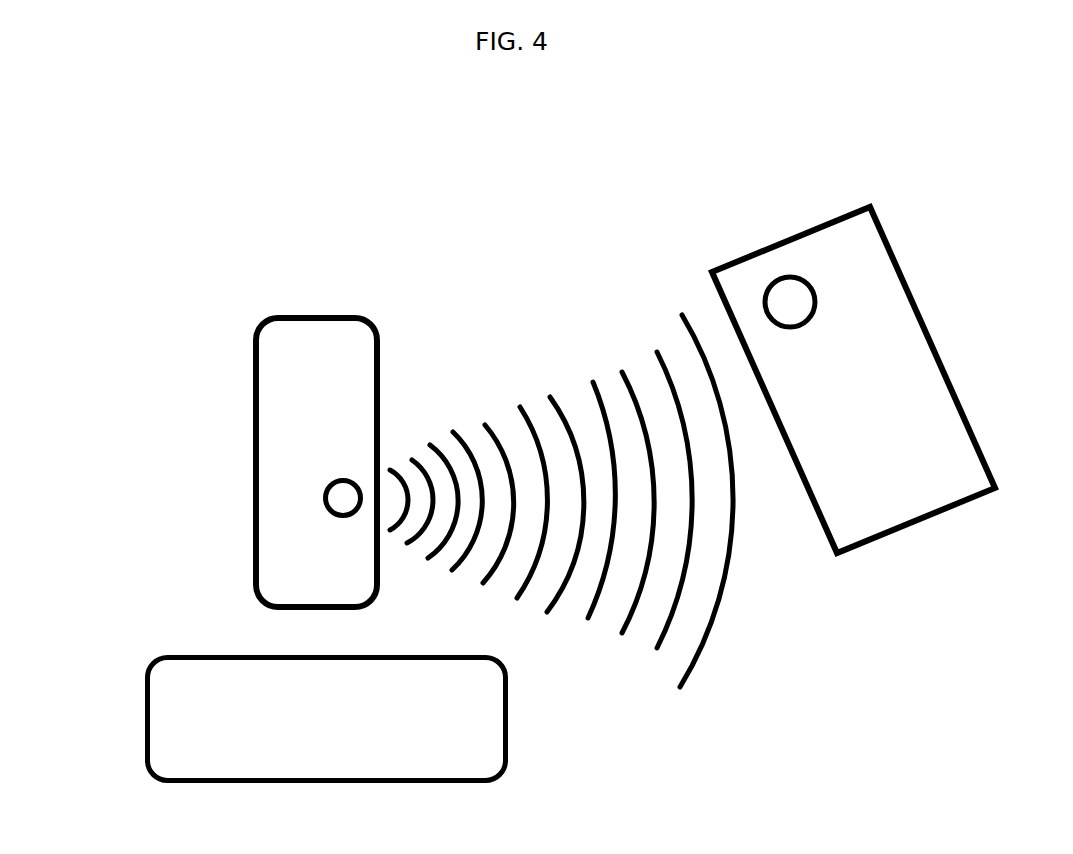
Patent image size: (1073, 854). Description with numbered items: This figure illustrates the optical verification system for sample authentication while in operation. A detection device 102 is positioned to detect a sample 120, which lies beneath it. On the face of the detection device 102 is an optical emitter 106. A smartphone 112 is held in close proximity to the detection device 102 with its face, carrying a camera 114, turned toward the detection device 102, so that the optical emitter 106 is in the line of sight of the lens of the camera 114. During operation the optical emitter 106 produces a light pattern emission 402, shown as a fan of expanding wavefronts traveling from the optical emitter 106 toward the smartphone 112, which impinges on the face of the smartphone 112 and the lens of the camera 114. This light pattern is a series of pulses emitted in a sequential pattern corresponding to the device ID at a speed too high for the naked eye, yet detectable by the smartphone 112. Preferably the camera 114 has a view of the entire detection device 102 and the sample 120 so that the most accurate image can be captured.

The detection device 102 is at (265, 318).
The optical emitter 106 is at (322, 493).
The light pattern emission 402 is at (547, 417).
The smartphone 112 is at (882, 225).
The camera 114 is at (783, 278).
The sample 120 is at (327, 719).